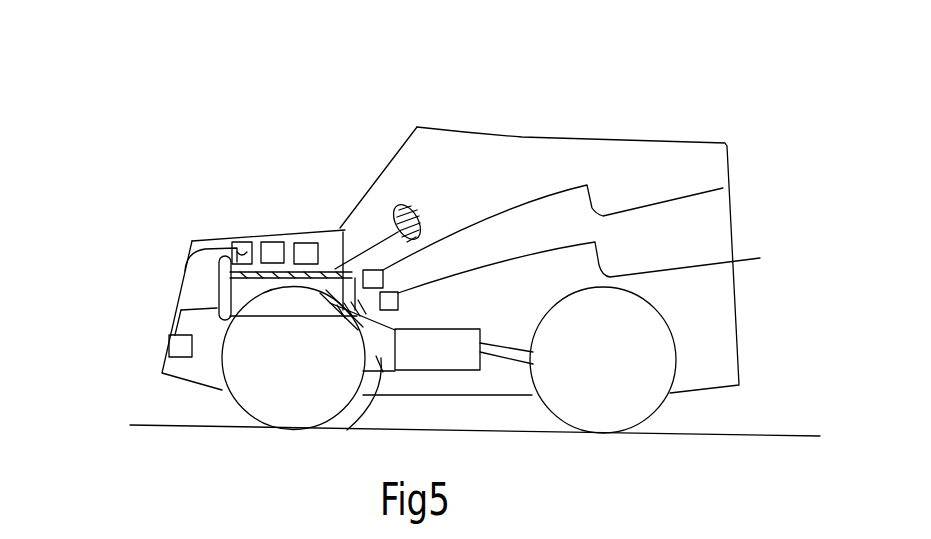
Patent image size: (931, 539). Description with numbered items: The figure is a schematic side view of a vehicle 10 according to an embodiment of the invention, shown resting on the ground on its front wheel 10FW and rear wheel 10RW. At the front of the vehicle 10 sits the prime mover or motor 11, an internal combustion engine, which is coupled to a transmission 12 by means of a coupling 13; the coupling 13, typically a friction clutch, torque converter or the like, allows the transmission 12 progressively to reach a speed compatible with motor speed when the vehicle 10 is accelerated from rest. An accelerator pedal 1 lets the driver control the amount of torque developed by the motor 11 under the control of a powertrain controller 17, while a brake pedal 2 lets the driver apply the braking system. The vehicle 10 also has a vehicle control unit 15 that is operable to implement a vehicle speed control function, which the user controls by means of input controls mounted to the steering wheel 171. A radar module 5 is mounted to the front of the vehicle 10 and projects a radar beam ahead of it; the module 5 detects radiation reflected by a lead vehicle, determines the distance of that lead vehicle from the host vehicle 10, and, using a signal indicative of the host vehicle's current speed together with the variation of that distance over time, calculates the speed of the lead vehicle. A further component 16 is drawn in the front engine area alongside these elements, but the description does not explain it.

The vehicle 10 is at (318, 174).
The front wheel 10FW is at (270, 394).
The rear wheel 10RW is at (619, 398).
The accelerator pedal 1 is at (760, 258).
The brake pedal 2 is at (723, 188).
The steering wheel 171 is at (409, 203).
The radar module 5 is at (168, 340).
The motor 11 is at (262, 238).
The transmission 12 is at (470, 370).
The coupling 13 is at (347, 430).
The vehicle control unit 15 is at (280, 262).
The engine component 16 is at (312, 265).
The powertrain controller 17 is at (185, 271).